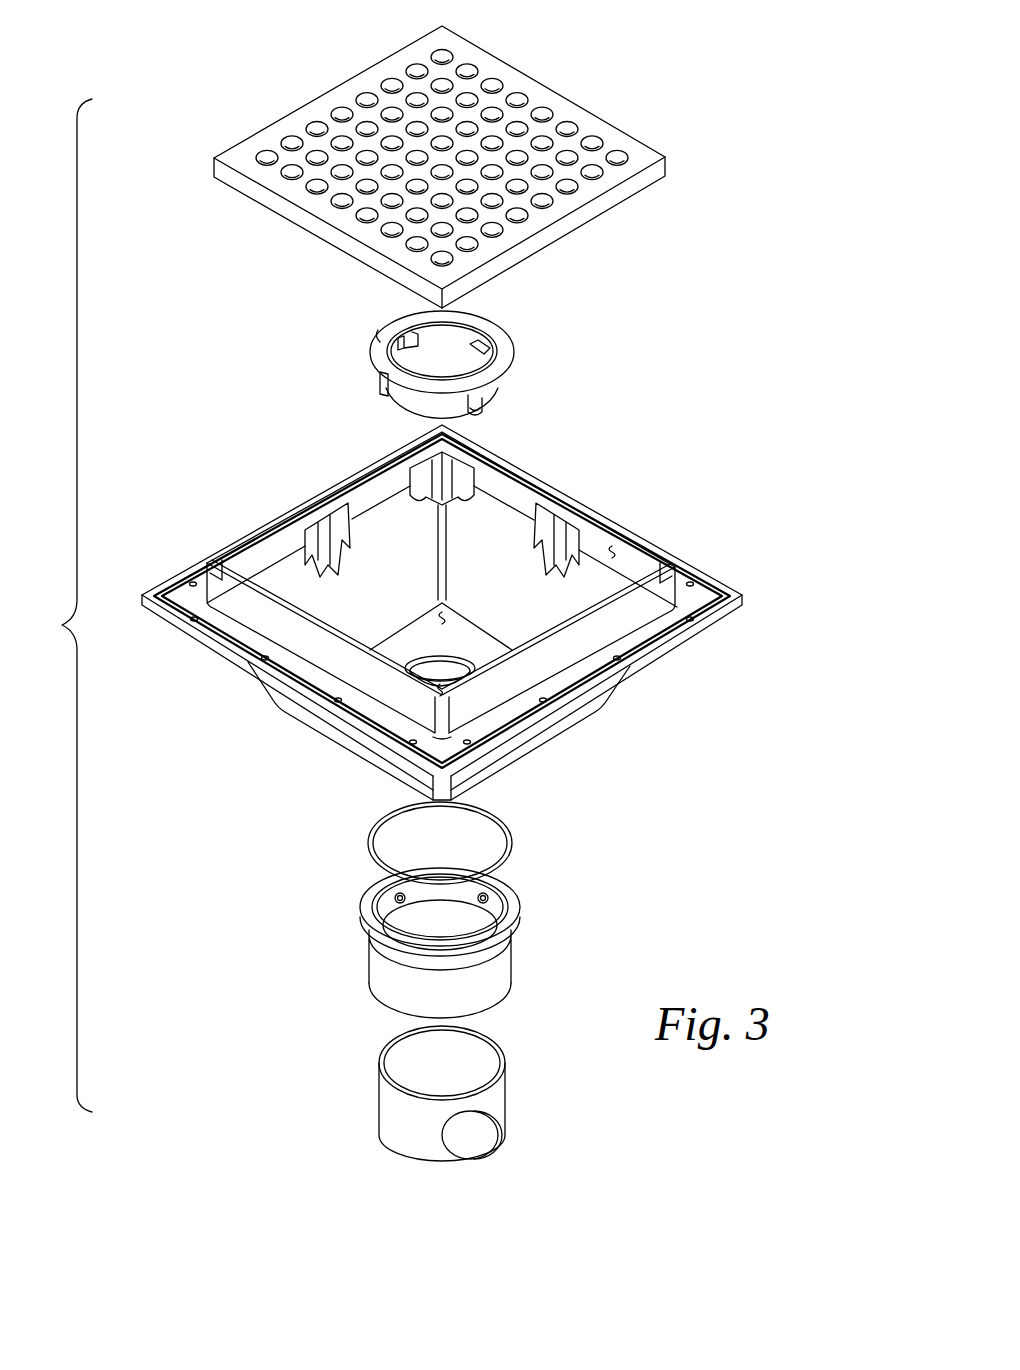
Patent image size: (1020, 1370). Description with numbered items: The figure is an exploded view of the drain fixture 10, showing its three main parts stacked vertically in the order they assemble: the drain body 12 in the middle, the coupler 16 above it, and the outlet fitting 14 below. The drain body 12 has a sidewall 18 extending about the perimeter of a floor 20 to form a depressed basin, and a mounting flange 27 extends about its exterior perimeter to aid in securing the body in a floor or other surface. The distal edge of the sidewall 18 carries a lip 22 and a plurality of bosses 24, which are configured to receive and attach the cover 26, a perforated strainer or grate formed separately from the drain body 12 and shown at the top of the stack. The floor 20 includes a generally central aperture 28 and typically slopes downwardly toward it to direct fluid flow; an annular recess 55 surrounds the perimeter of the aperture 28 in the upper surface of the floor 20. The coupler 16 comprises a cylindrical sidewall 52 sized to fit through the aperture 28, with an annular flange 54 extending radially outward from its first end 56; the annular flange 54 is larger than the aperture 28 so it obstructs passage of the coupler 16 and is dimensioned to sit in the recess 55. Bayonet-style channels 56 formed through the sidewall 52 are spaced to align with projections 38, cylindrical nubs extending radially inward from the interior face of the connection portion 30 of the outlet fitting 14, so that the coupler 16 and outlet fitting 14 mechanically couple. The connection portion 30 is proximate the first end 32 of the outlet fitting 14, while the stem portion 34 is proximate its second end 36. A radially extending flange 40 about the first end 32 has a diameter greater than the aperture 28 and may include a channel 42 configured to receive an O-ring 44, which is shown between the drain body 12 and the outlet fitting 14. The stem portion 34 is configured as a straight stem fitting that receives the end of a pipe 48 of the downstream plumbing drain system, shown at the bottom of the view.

The drain fixture 10 is at (58, 605).
The drain body 12 is at (486, 612).
The outlet fitting 14 is at (441, 941).
The coupler 16 is at (449, 365).
The sidewall 18 is at (615, 550).
The floor 20 is at (438, 618).
The lip 22 is at (486, 612).
The bosses 24 is at (565, 525).
The cover 26 is at (665, 155).
The mounting flange 27 is at (745, 600).
The aperture 28 is at (440, 686).
The connection portion 30 is at (485, 893).
The first end 32 is at (505, 880).
The stem portion 34 is at (515, 960).
The second end 36 is at (490, 1012).
The projections 38 is at (395, 893).
The flange 40 is at (522, 905).
The channel 42 is at (375, 900).
The O-ring 44 is at (505, 812).
The pipe 48 is at (380, 1100).
The cylindrical sidewall 52 is at (380, 382).
The annular flange 54 is at (377, 335).
The annular recess 55 is at (427, 662).
The bayonet-style channels 56 is at (470, 412).